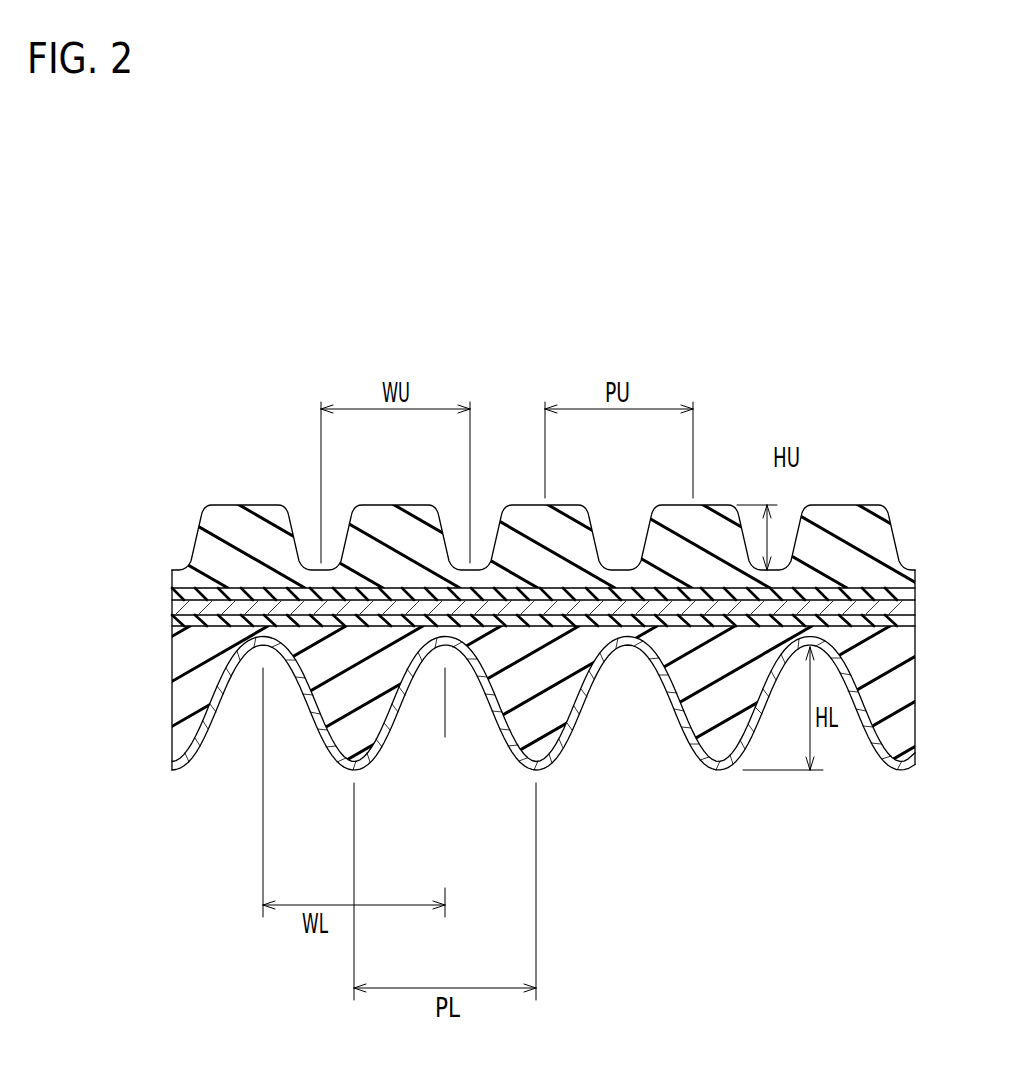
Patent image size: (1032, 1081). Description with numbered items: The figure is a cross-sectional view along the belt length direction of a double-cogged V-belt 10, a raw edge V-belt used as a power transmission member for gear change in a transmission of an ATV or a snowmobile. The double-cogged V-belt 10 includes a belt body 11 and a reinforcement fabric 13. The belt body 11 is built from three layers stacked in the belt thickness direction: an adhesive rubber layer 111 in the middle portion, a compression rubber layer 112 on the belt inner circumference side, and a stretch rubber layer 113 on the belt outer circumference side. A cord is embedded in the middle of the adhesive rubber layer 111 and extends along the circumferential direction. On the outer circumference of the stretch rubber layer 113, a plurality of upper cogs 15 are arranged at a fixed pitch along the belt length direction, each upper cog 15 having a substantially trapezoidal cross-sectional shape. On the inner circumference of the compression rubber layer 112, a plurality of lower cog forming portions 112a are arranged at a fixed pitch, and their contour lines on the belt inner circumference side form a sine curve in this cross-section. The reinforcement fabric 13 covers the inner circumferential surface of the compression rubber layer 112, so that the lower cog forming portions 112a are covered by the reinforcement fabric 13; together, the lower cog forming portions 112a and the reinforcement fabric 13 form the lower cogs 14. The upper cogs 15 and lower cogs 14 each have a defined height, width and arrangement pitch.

The double-cogged V-belt 10 is at (516, 619).
The belt body 11 is at (516, 635).
The adhesive rubber layer 111 is at (180, 598).
The compression rubber layer 112 is at (516, 701).
The stretch rubber layer 113 is at (182, 580).
The lower cog forming portion 112a is at (500, 687).
The reinforcement fabric 13 is at (510, 755).
The lower cog 14 is at (543, 761).
The upper cog 15 is at (250, 523).